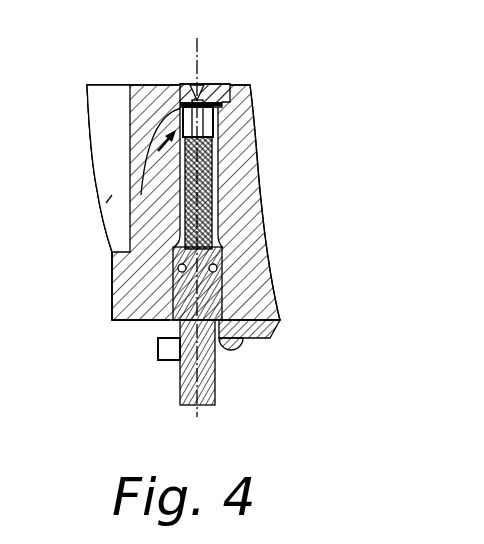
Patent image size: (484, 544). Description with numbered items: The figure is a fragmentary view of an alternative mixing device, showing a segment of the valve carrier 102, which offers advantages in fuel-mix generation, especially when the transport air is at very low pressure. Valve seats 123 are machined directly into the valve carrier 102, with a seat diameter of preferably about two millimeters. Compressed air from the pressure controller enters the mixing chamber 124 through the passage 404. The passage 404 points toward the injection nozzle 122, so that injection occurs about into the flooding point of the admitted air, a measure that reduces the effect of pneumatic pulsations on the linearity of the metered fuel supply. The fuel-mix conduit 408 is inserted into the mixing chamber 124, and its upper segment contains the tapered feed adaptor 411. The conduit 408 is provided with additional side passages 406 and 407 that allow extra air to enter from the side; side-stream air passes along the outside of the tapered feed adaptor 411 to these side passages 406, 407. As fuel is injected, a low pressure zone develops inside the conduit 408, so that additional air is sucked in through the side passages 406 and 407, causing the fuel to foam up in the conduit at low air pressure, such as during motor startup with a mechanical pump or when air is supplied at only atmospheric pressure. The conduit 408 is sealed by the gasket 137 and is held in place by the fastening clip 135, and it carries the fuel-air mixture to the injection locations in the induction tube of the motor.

The valve carrier 102 is at (267, 284).
The injection nozzle 122 is at (225, 70).
The valve seats 123 is at (192, 68).
The mixing chamber 124 is at (247, 88).
The fastening clip 135 is at (240, 348).
The gasket 137 is at (267, 227).
The passage 404 is at (97, 177).
The side passage 406 is at (255, 195).
The side passage 407 is at (110, 307).
The fuel-mix conduit 408 is at (183, 375).
The tapered feed adaptor 411 is at (260, 137).